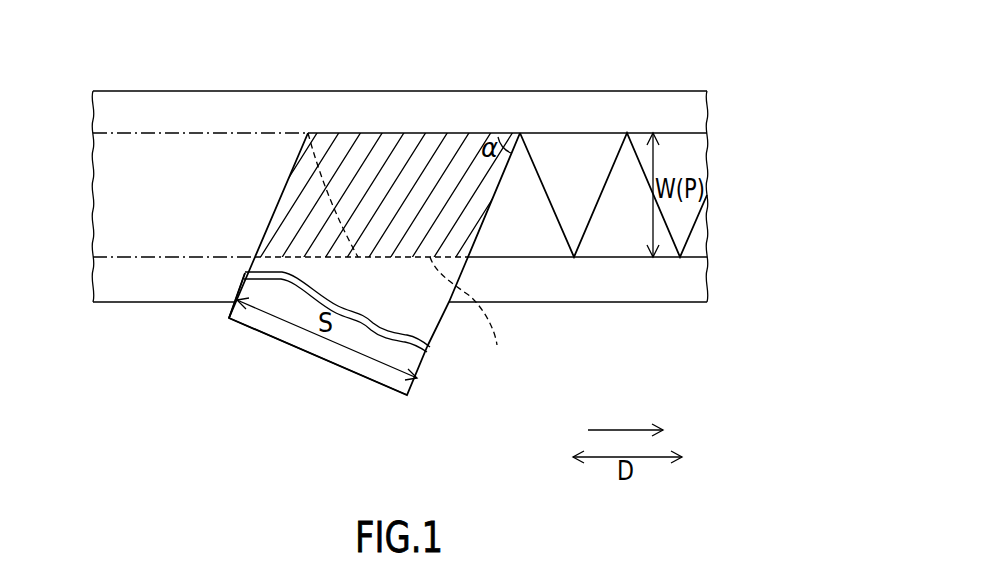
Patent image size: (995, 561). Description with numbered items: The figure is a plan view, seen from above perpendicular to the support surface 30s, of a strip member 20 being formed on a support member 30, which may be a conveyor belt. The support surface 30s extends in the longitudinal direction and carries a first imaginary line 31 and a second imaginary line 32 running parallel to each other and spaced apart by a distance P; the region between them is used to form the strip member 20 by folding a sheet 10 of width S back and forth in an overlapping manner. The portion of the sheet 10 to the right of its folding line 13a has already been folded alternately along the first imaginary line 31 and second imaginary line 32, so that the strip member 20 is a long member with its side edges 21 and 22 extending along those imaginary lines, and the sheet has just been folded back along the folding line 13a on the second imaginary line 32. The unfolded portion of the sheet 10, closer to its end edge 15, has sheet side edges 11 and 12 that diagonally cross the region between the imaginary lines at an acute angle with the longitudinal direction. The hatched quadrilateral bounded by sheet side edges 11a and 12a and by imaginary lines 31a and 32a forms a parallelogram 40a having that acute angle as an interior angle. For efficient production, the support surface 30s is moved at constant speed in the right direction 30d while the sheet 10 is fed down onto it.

The support member 30 is at (145, 86).
The support surface 30s is at (270, 117).
The second imaginary line 32 is at (178, 133).
The first imaginary line 31 is at (138, 257).
The folding line 13a is at (343, 133).
The imaginary line 32a is at (402, 133).
The parallelogram 40a is at (430, 177).
The side edge 22 is at (550, 133).
The strip member 20 is at (568, 163).
The side edge 21 is at (597, 257).
The sheet side edge 11a is at (478, 225).
The sheet side edge 12a is at (280, 193).
The imaginary line 31a is at (473, 315).
The sheet 10 is at (377, 367).
The end edge 15 is at (303, 350).
The sheet side edge 12 is at (243, 281).
The sheet side edge 11 is at (428, 367).
The right direction 30d is at (627, 430).